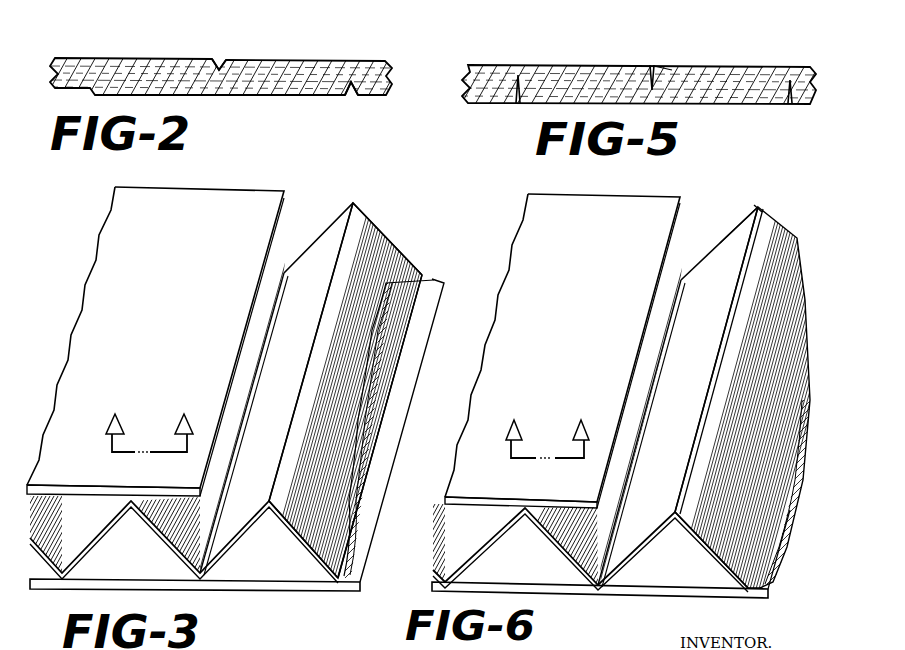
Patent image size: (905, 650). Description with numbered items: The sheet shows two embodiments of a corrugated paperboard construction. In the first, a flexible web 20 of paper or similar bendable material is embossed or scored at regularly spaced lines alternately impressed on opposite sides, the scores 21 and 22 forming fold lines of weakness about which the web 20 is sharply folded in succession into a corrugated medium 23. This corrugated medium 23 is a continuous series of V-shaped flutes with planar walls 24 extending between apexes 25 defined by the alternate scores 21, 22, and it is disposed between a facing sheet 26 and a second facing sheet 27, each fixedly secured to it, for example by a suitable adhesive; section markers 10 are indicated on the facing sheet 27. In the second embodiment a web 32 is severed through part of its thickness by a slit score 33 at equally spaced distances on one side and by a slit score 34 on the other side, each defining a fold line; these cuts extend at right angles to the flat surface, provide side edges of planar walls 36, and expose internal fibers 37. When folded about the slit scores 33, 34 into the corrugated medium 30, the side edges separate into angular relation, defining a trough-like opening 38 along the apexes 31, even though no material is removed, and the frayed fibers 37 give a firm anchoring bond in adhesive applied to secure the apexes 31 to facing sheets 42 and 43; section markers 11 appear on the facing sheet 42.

In FIG. 2, the flexible web 20 is at (138, 58).
In FIG. 2, the score 21 is at (222, 60).
In FIG. 2, the score 22 is at (351, 97).
In FIG. 5, the web 32 is at (590, 64).
In FIG. 5, the slit score 33 is at (676, 42).
In FIG. 5, the slit score 34 is at (516, 104).
In FIG. 5, the internal fibers 37 is at (672, 72).
In FIG. 6, the internal fibers 37 is at (709, 386).
In FIG. 3, the corrugated medium 23 is at (323, 232).
In FIG. 3, the planar walls 24 is at (385, 253).
In FIG. 3, the apexes 25 is at (353, 203).
In FIG. 3, the facing sheet 26 is at (268, 590).
In FIG. 3, the second facing sheet 27 is at (178, 317).
In FIG. 3, the section line 10 is at (159, 421).
In FIG. 6, the corrugated medium 30 is at (746, 222).
In FIG. 6, the apexes 31 is at (754, 210).
In FIG. 6, the trough-like opening 38 is at (766, 206).
In FIG. 6, the facing sheet 42 is at (590, 329).
In FIG. 6, the facing sheet 43 is at (527, 576).
In FIG. 6, the planar walls 36 is at (705, 540).
In FIG. 6, the section line 11 is at (556, 427).